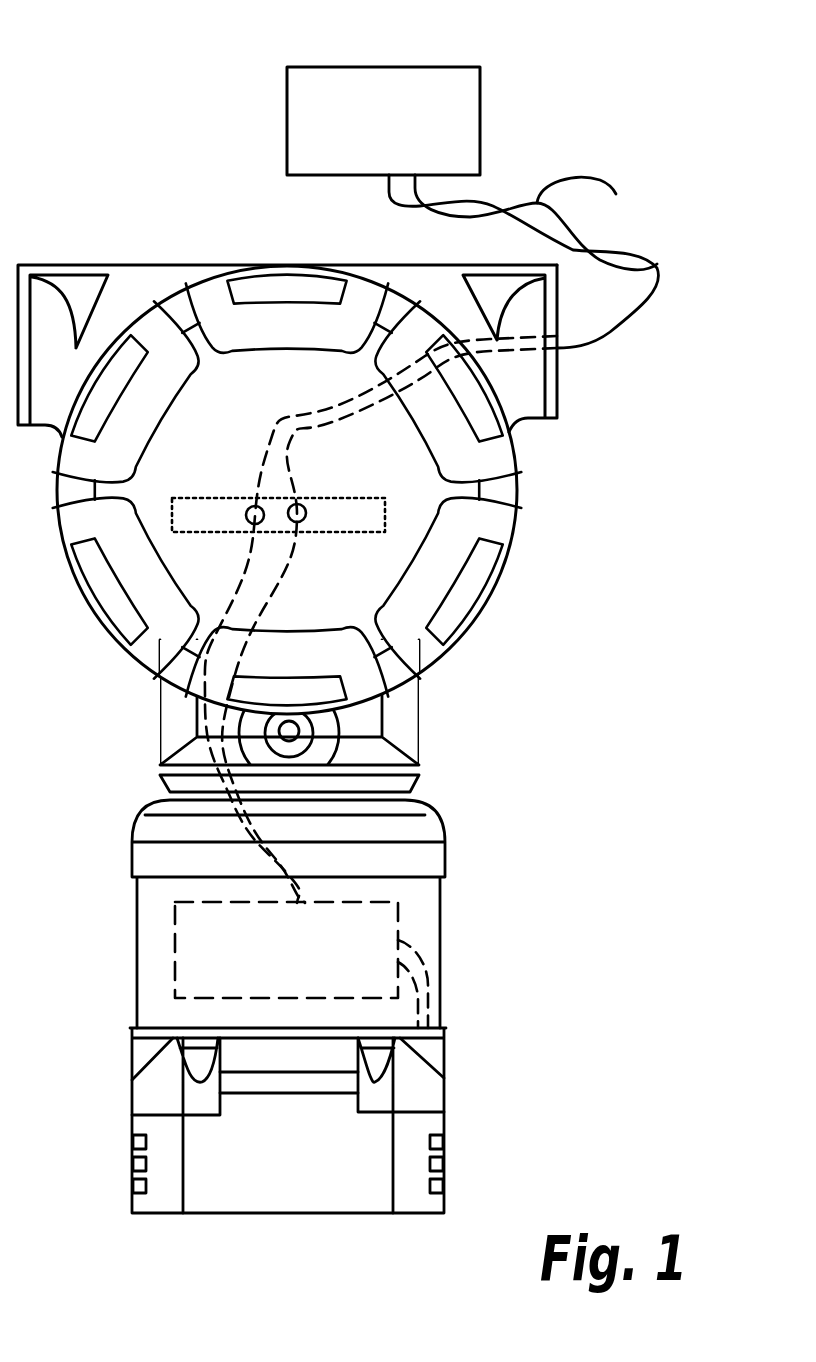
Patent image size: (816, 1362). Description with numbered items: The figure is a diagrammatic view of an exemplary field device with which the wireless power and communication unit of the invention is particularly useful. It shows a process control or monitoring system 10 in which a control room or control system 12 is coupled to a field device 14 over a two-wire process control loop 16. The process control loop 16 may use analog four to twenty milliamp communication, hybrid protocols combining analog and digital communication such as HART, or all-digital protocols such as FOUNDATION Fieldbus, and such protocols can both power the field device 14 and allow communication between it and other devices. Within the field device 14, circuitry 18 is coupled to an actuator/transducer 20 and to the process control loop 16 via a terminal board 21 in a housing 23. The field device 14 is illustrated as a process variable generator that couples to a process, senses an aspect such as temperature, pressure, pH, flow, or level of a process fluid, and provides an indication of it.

The process control or monitoring system 10 is at (182, 192).
The control system 12 is at (480, 75).
The field device 14 is at (120, 920).
The two-wire process control loop 16 is at (613, 248).
The circuitry 18 is at (398, 921).
The actuator/transducer 20 is at (443, 1127).
The terminal board 21 is at (365, 532).
The housing 23 is at (514, 477).